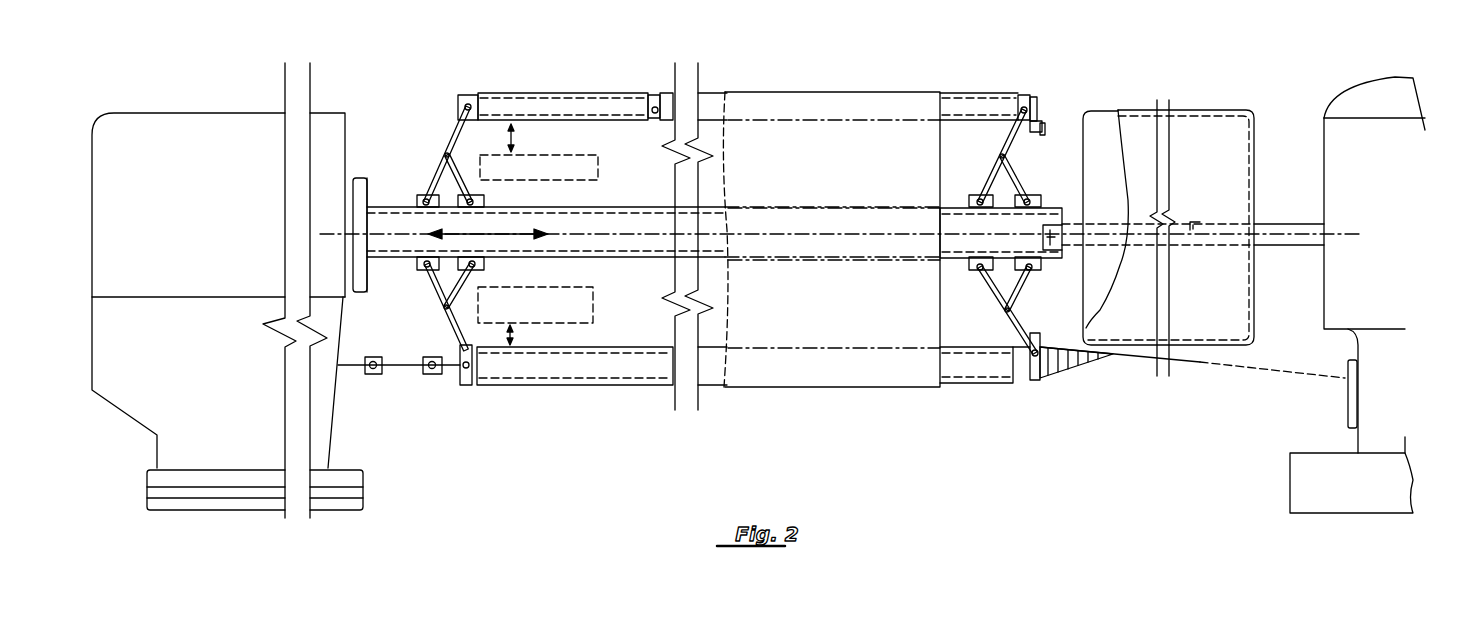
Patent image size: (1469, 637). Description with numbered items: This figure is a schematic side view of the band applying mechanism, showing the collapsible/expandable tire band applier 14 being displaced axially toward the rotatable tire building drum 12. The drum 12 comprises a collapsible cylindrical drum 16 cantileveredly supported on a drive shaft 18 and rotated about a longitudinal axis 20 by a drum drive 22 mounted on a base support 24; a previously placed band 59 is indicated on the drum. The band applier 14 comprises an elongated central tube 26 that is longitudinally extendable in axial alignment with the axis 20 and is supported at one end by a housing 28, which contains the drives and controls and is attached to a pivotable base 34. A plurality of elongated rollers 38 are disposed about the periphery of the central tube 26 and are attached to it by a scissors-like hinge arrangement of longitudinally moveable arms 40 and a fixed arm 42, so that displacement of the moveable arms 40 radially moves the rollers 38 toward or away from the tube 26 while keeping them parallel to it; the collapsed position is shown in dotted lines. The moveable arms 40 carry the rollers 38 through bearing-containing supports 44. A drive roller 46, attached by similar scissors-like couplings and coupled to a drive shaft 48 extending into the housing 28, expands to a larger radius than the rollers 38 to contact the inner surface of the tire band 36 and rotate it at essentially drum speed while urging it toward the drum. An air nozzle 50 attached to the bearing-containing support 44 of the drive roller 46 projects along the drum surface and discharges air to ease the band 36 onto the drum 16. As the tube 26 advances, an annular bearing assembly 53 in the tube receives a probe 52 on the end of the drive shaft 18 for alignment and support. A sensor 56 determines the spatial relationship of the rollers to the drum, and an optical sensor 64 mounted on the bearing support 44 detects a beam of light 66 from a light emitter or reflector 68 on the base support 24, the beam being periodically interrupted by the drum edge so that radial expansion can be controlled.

The rotatable tire building drum 12 is at (1288, 128).
The collapsible/expandable tire band applier 14 is at (402, 115).
The collapsible cylindrical drum 16 is at (1100, 120).
The drive shaft 18 is at (1286, 248).
The longitudinal axis 20 is at (1193, 216).
The drum drive 22 is at (1340, 160).
The base support 24 is at (1385, 418).
The elongated central tube 26 is at (618, 245).
The housing 28 is at (322, 408).
The base 34 is at (366, 483).
The tire band 36 is at (832, 90).
The rollers 38 is at (546, 100).
The moveable arms 40 is at (440, 165).
The fixed arm 42 is at (452, 160).
The bearing-containing supports 44 is at (458, 103).
The drive roller 46 is at (548, 377).
The drive shaft 48 is at (404, 372).
The air nozzle 50 is at (1080, 368).
The probe 52 is at (1075, 222).
The annular bearing assembly 53 is at (1067, 250).
The sensor 56 is at (1045, 123).
The previously placed band 59 is at (1143, 108).
The optical sensor 64 is at (1002, 350).
The beam of light 66 is at (1207, 367).
The light emitter or reflector 68 is at (1356, 396).